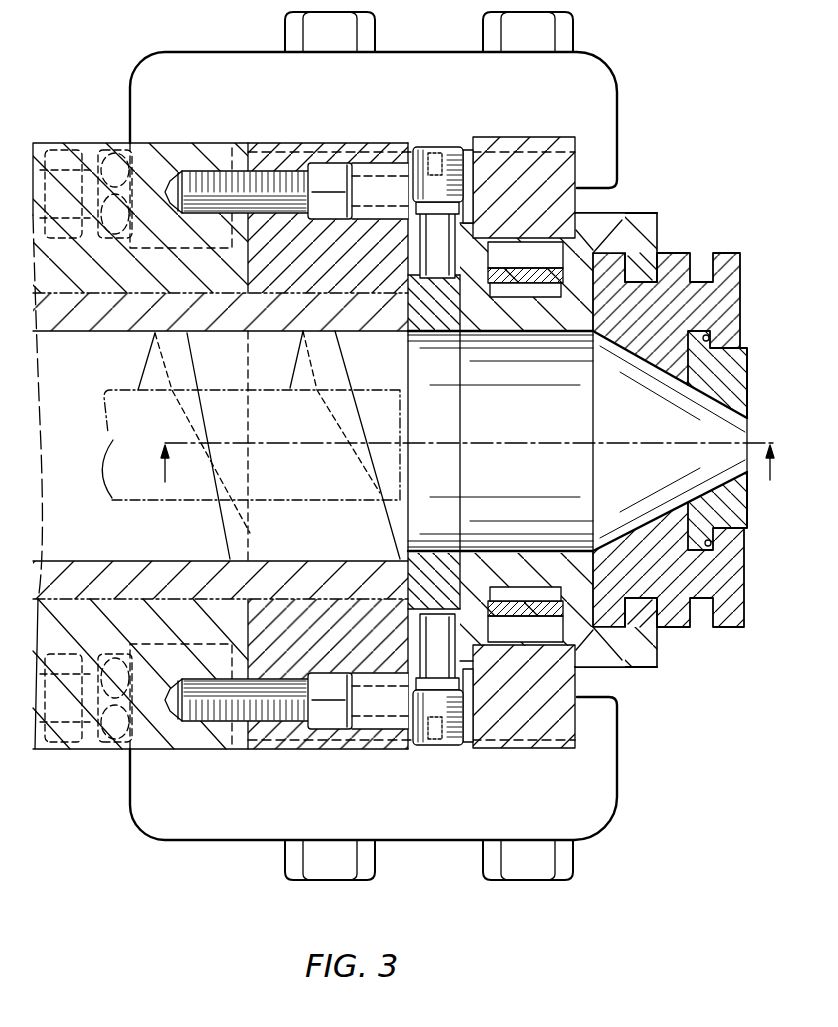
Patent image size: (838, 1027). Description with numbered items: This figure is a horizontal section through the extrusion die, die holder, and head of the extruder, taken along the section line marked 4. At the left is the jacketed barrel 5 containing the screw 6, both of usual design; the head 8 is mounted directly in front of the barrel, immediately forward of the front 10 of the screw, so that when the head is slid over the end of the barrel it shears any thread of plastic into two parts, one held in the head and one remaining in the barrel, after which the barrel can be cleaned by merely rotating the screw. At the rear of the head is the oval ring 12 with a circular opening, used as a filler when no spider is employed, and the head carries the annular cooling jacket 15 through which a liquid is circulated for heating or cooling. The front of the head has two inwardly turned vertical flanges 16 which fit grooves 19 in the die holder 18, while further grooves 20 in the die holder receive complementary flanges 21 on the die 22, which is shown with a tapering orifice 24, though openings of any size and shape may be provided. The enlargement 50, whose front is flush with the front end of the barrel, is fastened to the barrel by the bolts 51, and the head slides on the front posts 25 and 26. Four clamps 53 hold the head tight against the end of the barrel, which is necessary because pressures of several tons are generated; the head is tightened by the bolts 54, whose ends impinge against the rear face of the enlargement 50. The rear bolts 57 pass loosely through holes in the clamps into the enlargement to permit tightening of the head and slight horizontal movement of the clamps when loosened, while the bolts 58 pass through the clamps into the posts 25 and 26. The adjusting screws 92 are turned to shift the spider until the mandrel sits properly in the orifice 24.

The section line 4 is at (468, 448).
The jacketed barrel 5 is at (63, 143).
The screw 6 is at (125, 502).
The head 8 is at (634, 200).
The front of the screw 10 is at (401, 432).
The oval ring 12 is at (423, 557).
The annular cooling jacket 15 is at (618, 671).
The vertical flanges 16 is at (647, 268).
The die holder 18 is at (735, 288).
The grooves 19 is at (633, 270).
The grooves 20 is at (709, 336).
The flanges 21 is at (703, 542).
The die 22 is at (738, 381).
The tapering orifice 24 is at (727, 467).
The post 25 is at (577, 720).
The post 26 is at (568, 153).
The enlargement 50 is at (398, 750).
The bolts 51 is at (327, 168).
The clamps 53 is at (186, 54).
The bolts 54 is at (92, 178).
The rear bolts 57 is at (286, 50).
The bolts 58 is at (484, 31).
The adjusting screws 92 is at (440, 168).